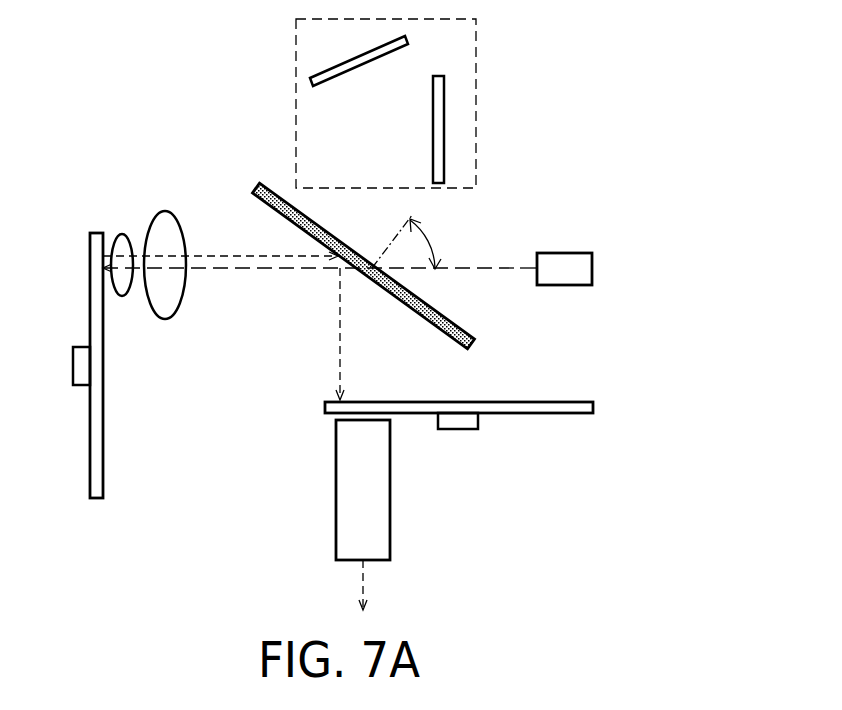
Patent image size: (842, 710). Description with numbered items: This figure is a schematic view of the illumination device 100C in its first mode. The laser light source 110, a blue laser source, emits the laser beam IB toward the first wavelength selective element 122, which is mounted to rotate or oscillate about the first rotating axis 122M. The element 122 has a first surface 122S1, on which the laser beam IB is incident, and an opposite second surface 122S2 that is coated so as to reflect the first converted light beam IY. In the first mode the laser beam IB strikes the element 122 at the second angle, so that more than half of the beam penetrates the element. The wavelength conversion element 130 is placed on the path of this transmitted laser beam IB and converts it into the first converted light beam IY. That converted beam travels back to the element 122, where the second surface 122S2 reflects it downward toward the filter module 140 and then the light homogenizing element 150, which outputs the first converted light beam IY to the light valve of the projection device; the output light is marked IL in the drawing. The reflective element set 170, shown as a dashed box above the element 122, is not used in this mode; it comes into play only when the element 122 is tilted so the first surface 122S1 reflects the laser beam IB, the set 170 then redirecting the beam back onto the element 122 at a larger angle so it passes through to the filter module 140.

The illumination device 100C is at (705, 592).
The laser light source 110 is at (592, 268).
The first wavelength selective element 122 is at (447, 286).
The first rotating axis 122M is at (378, 274).
The first surface 122S1 is at (467, 329).
The second surface 122S2 is at (444, 334).
The wavelength conversion element 130 is at (90, 445).
The filter module 140 is at (545, 413).
The light homogenizing element 150 is at (390, 489).
The reflective element set 170 is at (296, 126).
The first converted light beam IY is at (218, 254).
The laser beam IB is at (512, 267).
The sensing light IL is at (365, 581).